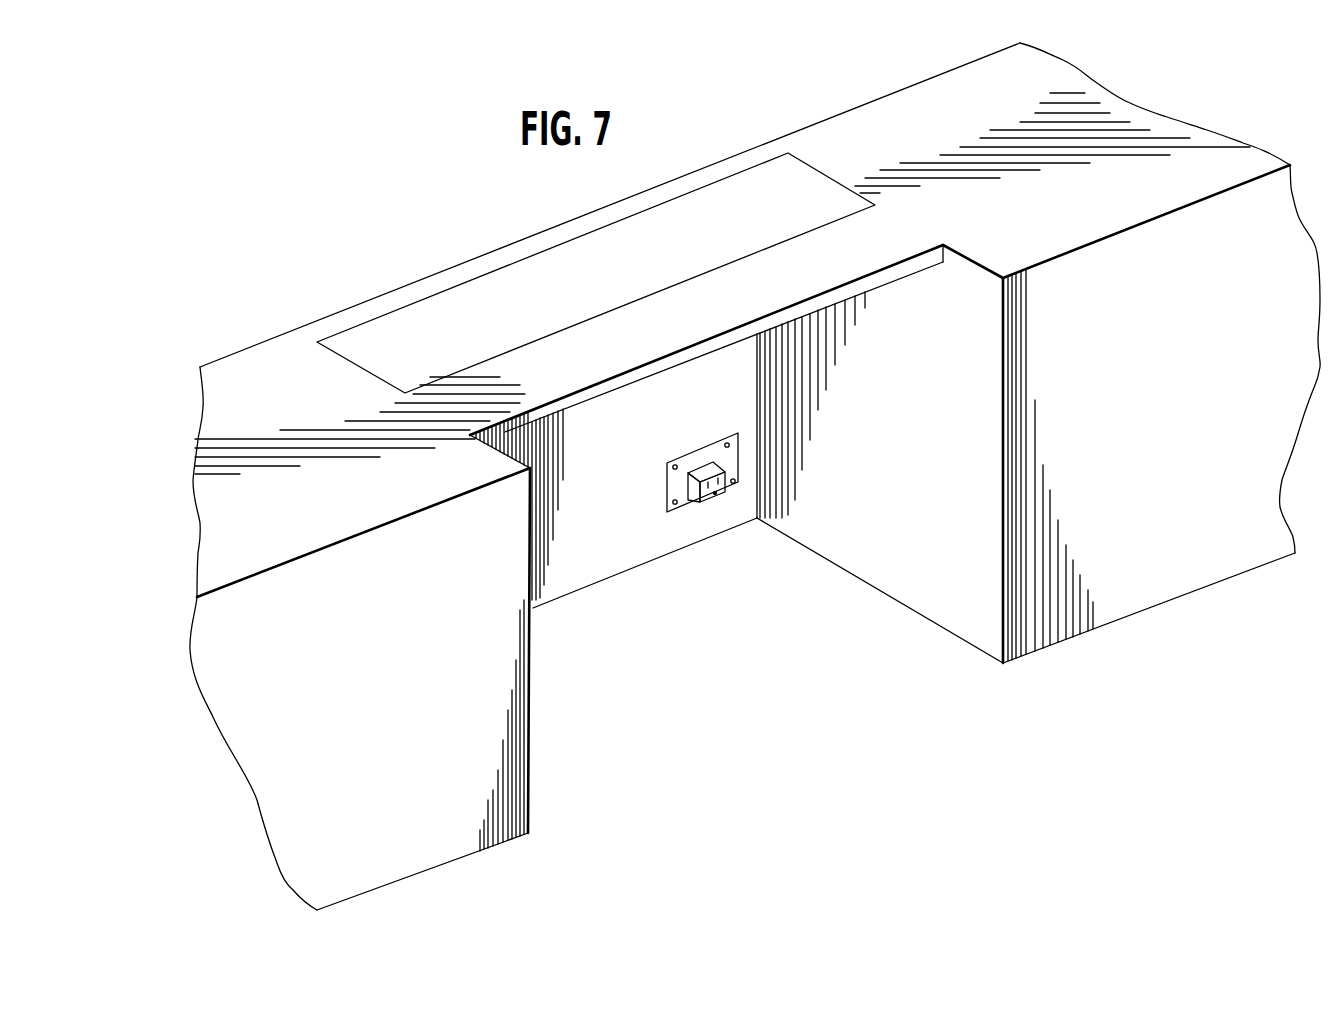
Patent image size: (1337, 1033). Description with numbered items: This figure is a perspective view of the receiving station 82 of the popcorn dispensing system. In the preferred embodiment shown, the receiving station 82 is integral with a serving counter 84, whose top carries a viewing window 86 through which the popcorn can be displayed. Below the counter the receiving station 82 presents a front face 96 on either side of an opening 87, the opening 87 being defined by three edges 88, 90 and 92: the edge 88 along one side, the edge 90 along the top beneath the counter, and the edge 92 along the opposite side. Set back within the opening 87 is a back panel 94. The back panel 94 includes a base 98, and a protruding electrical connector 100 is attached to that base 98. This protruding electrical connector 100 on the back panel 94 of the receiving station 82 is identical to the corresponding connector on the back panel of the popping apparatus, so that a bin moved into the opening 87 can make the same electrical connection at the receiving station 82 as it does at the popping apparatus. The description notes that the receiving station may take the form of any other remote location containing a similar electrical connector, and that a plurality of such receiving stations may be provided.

The receiving station 82 is at (472, 222).
The serving counter 84 is at (1031, 226).
The viewing window 86 is at (567, 260).
The opening 87 is at (717, 658).
The edge 88 is at (528, 670).
The edge 90 is at (610, 393).
The edge 92 is at (1003, 577).
The back panel 94 is at (625, 525).
The front face 96 is at (369, 635).
The base 98 is at (668, 487).
The protruding electrical connector 100 is at (727, 492).